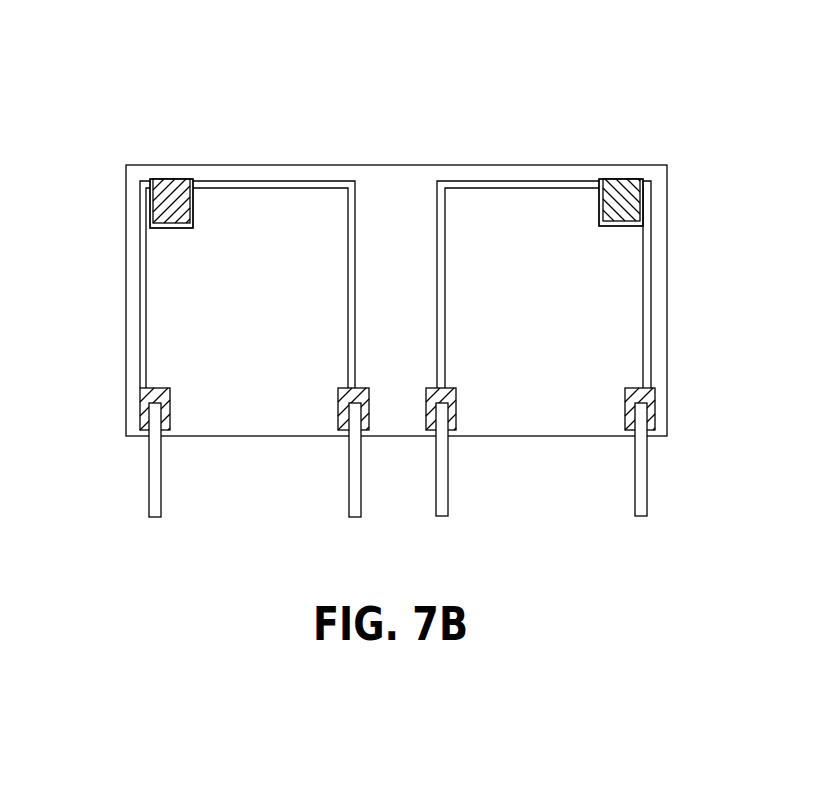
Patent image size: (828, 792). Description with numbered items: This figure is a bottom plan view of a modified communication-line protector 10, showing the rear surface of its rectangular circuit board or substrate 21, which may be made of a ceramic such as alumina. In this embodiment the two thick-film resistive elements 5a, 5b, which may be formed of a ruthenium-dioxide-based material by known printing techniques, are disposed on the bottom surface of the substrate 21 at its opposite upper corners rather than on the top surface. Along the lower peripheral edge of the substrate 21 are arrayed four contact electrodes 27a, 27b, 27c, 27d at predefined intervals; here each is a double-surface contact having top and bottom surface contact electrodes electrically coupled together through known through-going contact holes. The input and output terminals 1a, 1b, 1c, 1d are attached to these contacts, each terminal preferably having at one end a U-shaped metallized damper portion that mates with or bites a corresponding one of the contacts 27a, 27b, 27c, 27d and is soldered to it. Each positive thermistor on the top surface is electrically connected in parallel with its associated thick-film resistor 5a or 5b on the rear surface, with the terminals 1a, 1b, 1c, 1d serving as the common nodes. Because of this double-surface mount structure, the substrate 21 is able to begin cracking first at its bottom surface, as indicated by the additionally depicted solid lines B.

The protective device 10 is at (76, 67).
The substrate 21 is at (387, 202).
The thick-film resistive element 5a is at (622, 183).
The thick-film resistive element 5b is at (167, 188).
The solid lines indicating cracking B is at (153, 217).
The double-surface contact 27a is at (656, 403).
The double-surface contact 27b is at (455, 431).
The double-surface contact 27c is at (343, 431).
The double-surface contact 27d is at (143, 431).
The input/output terminal 1a is at (443, 495).
The input/output terminal 1b is at (355, 498).
The input/output terminal 1c is at (641, 500).
The input/output terminal 1d is at (156, 497).